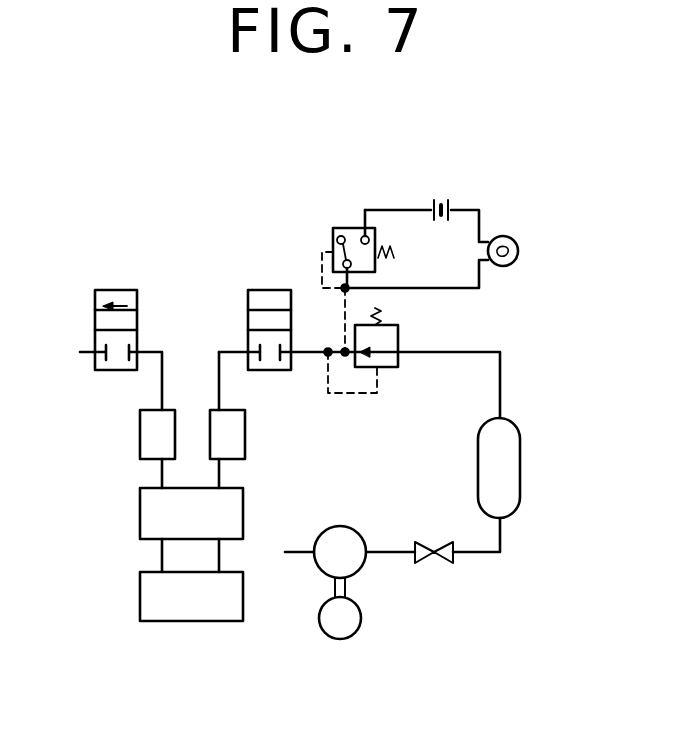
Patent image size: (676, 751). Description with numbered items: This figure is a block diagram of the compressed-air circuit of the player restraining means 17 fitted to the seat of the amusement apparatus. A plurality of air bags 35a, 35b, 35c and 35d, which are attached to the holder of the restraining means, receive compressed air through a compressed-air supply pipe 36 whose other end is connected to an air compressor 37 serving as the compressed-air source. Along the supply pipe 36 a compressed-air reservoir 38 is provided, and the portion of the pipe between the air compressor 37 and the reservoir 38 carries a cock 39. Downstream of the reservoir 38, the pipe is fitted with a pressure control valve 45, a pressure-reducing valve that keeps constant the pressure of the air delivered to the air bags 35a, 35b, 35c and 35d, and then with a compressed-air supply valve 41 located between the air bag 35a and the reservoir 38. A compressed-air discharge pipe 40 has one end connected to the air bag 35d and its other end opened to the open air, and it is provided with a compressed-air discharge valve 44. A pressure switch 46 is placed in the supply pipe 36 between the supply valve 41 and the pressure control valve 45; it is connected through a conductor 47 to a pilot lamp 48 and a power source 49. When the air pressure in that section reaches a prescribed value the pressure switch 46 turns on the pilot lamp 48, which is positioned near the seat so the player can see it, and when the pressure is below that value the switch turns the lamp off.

The player restraining means 17 is at (190, 256).
The compressed-air discharge valve 44 is at (118, 290).
The compressed-air discharge pipe 40 is at (162, 378).
The compressed-air supply valve 41 is at (272, 290).
The air bag 35a is at (245, 432).
The air bag 35b is at (243, 503).
The air bag 35c is at (140, 597).
The air bag 35d is at (140, 432).
The compressed-air supply pipe 36 is at (474, 352).
The air compressor 37 is at (352, 529).
The compressed-air reservoir 38 is at (522, 462).
The cock 39 is at (437, 562).
The pressure control valve 45 is at (398, 345).
The pressure switch 46 is at (348, 228).
The conductor 47 is at (404, 288).
The pilot lamp 48 is at (516, 244).
The power source 49 is at (444, 197).